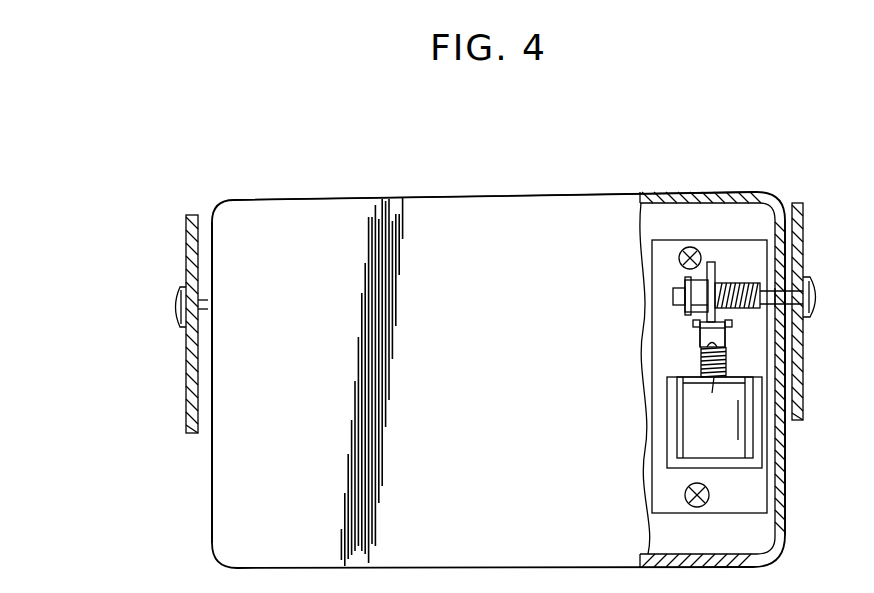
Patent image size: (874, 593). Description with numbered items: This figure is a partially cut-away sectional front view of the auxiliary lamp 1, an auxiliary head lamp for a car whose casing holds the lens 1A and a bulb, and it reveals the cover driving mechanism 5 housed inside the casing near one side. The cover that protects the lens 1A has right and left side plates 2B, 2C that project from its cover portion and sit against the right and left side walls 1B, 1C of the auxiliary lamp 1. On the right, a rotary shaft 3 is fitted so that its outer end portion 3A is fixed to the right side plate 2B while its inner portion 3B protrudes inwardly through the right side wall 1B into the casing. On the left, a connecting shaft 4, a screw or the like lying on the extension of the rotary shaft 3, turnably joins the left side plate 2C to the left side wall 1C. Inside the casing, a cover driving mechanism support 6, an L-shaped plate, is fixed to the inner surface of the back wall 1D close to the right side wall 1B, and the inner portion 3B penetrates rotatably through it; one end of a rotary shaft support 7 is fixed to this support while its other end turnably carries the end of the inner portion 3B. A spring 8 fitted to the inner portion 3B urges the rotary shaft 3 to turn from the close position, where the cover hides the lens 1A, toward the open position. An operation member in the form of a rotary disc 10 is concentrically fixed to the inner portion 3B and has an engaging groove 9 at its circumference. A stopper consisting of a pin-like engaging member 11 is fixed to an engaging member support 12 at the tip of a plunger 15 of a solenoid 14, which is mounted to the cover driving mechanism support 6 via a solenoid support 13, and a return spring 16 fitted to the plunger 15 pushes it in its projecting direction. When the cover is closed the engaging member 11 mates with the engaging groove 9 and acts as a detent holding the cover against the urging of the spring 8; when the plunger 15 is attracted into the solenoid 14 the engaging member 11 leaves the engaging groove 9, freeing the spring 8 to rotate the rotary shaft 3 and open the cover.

The auxiliary lamp 1 is at (207, 462).
The lens 1A is at (228, 505).
The right side wall 1B is at (792, 404).
The left side wall 1C is at (200, 408).
The back wall 1D is at (694, 220).
The right side plate 2B is at (808, 245).
The left side plate 2C is at (185, 252).
The rotary shaft 3 is at (816, 289).
The outer end portion 3A is at (790, 296).
The inner portion 3B is at (697, 297).
The connecting shaft 4 is at (173, 306).
The cover driving mechanism 5 is at (680, 311).
The cover driving mechanism support 6 is at (658, 248).
The rotary shaft support 7 is at (683, 280).
The spring 8 is at (738, 288).
The engaging groove 9 is at (700, 340).
The rotary disc 10 is at (713, 270).
The engaging member 11 is at (732, 329).
The engaging member support 12 is at (697, 331).
The solenoid support 13 is at (672, 448).
The solenoid 14 is at (745, 446).
The plunger 15 is at (728, 365).
The return spring 16 is at (712, 400).